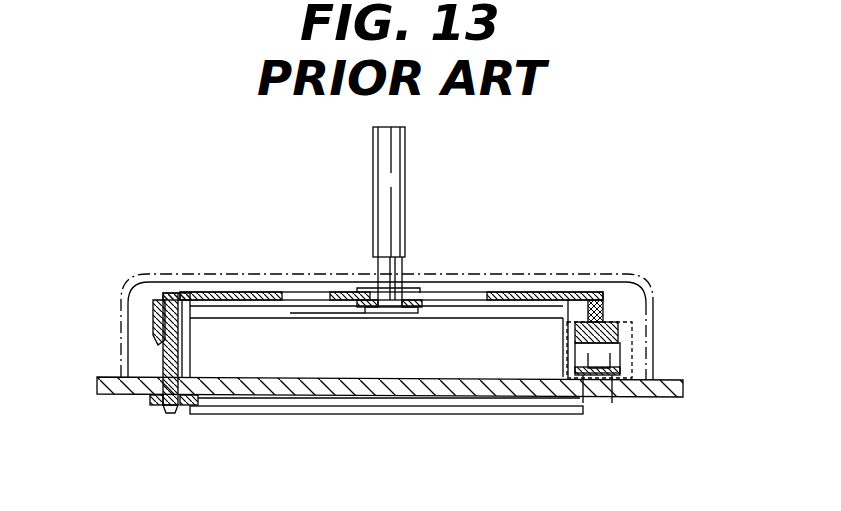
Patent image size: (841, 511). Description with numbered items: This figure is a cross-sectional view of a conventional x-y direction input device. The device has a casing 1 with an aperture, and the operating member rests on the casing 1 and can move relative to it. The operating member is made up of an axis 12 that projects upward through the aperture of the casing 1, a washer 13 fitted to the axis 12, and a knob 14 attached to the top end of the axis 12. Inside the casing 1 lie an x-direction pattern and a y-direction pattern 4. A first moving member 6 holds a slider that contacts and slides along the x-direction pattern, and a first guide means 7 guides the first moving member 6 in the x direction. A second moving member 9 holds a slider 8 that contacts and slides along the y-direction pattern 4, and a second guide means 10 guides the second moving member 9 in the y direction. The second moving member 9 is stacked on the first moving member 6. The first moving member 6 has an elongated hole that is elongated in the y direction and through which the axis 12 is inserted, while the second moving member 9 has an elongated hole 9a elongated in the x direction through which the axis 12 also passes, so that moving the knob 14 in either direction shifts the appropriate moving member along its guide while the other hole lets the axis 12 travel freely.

The casing 1 is at (642, 287).
The y-direction pattern 4 is at (560, 400).
The first moving member 6 is at (335, 312).
The first guide means 7 is at (435, 353).
The slider 8 is at (612, 352).
The second moving member 9 is at (235, 293).
The elongated hole 9a is at (305, 293).
The second guide means 10 is at (160, 361).
The axis 12 is at (390, 290).
The washer 13 is at (420, 287).
The knob 14 is at (403, 163).